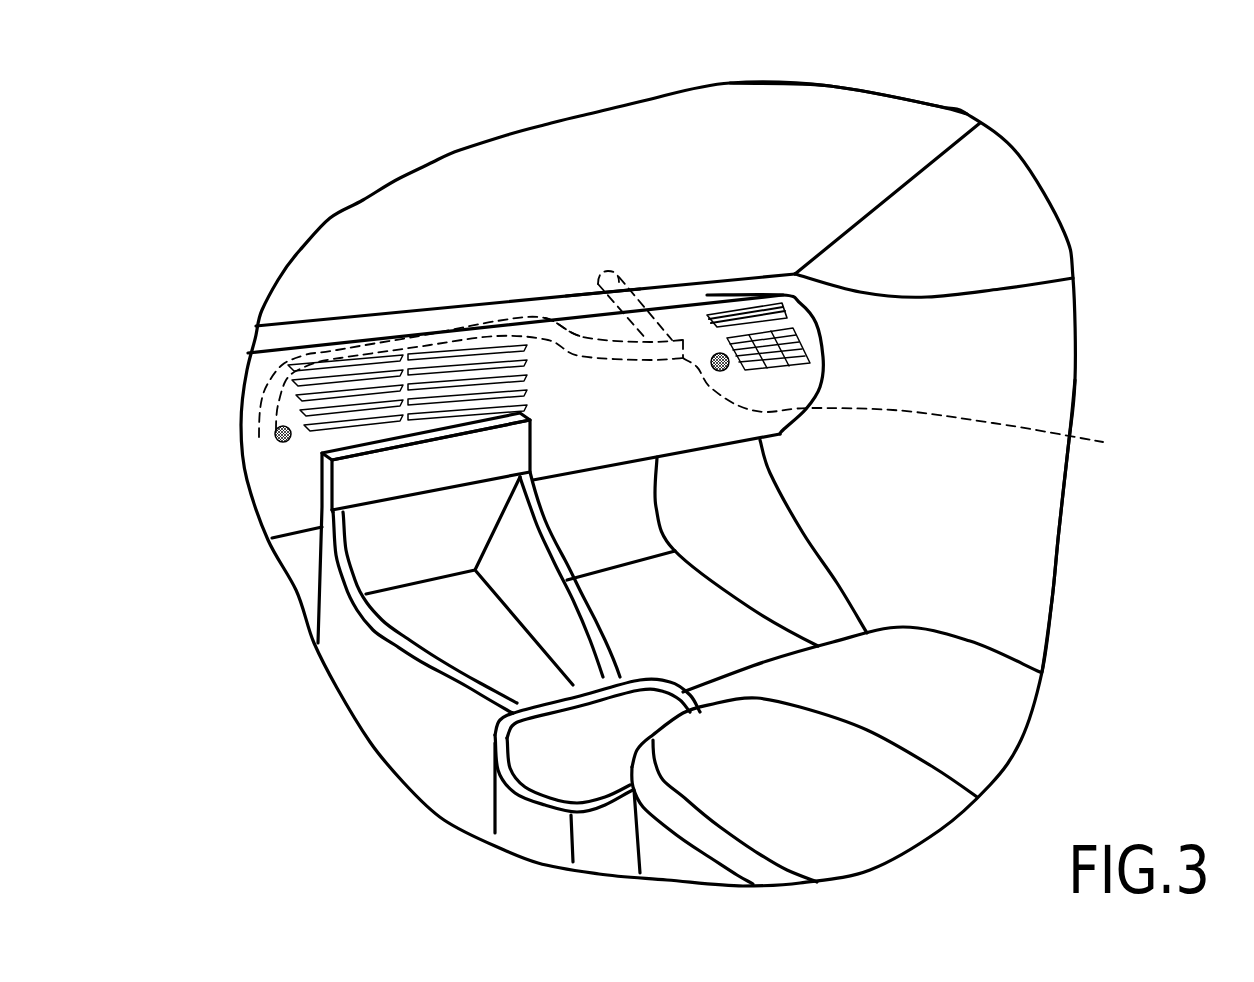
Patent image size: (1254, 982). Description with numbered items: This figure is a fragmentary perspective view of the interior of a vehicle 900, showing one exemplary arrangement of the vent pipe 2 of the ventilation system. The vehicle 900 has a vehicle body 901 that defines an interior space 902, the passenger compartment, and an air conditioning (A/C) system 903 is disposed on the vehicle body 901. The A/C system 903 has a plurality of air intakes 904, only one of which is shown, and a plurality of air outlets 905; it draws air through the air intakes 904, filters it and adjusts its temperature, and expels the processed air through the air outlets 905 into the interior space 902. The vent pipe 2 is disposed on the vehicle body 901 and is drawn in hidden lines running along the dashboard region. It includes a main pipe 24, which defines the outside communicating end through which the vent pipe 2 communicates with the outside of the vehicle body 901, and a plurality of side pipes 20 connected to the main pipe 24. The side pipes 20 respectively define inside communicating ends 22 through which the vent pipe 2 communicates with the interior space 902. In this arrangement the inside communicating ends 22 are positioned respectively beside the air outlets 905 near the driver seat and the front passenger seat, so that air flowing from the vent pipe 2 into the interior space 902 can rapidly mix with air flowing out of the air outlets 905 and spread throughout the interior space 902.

The vent pipe 2 is at (515, 320).
The side pipes 20 is at (468, 323).
The inside communicating ends 22 is at (716, 356).
The main pipe 24 is at (586, 300).
The vehicle 900 is at (1054, 578).
The vehicle body 901 is at (939, 106).
The interior space 902 is at (1007, 533).
The air conditioning (A/C) system 903 is at (298, 371).
The air intakes 904 is at (770, 302).
The air outlets 905 is at (357, 380).